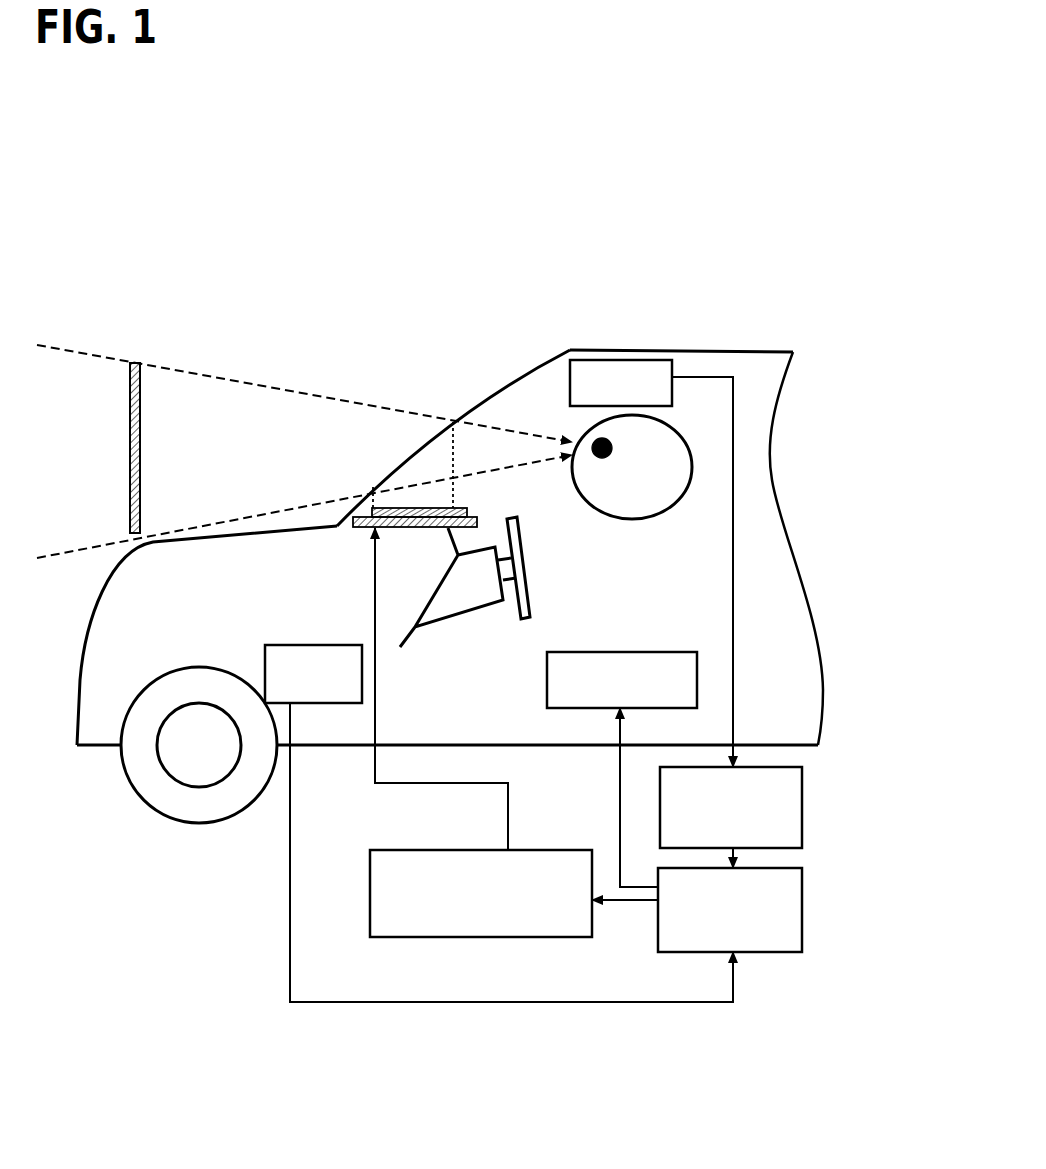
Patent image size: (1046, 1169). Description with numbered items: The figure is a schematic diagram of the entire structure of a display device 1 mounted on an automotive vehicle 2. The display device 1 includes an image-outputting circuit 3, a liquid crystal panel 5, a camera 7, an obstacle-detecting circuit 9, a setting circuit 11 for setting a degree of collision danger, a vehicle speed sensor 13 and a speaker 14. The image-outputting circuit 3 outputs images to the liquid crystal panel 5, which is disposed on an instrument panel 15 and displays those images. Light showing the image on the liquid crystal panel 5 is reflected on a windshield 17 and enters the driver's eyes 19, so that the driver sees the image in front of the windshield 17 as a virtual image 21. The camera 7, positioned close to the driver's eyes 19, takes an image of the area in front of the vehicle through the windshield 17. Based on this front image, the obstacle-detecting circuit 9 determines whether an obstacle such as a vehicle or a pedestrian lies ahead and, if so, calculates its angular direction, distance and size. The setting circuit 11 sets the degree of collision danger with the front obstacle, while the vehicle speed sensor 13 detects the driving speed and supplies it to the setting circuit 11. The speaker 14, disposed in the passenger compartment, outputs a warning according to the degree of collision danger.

The display device 1 is at (813, 545).
The automotive vehicle 2 is at (765, 350).
The image-outputting circuit 3 is at (440, 938).
The liquid crystal panel 5 is at (292, 562).
The camera 7 is at (620, 355).
The obstacle-detecting circuit 9 is at (802, 795).
The setting circuit 11 is at (802, 937).
The vehicle speed sensor 13 is at (265, 675).
The speaker 14 is at (643, 650).
The instrument panel 15 is at (415, 528).
The windshield 17 is at (477, 403).
The driver's eyes 19 is at (610, 465).
The virtual image 21 is at (130, 420).